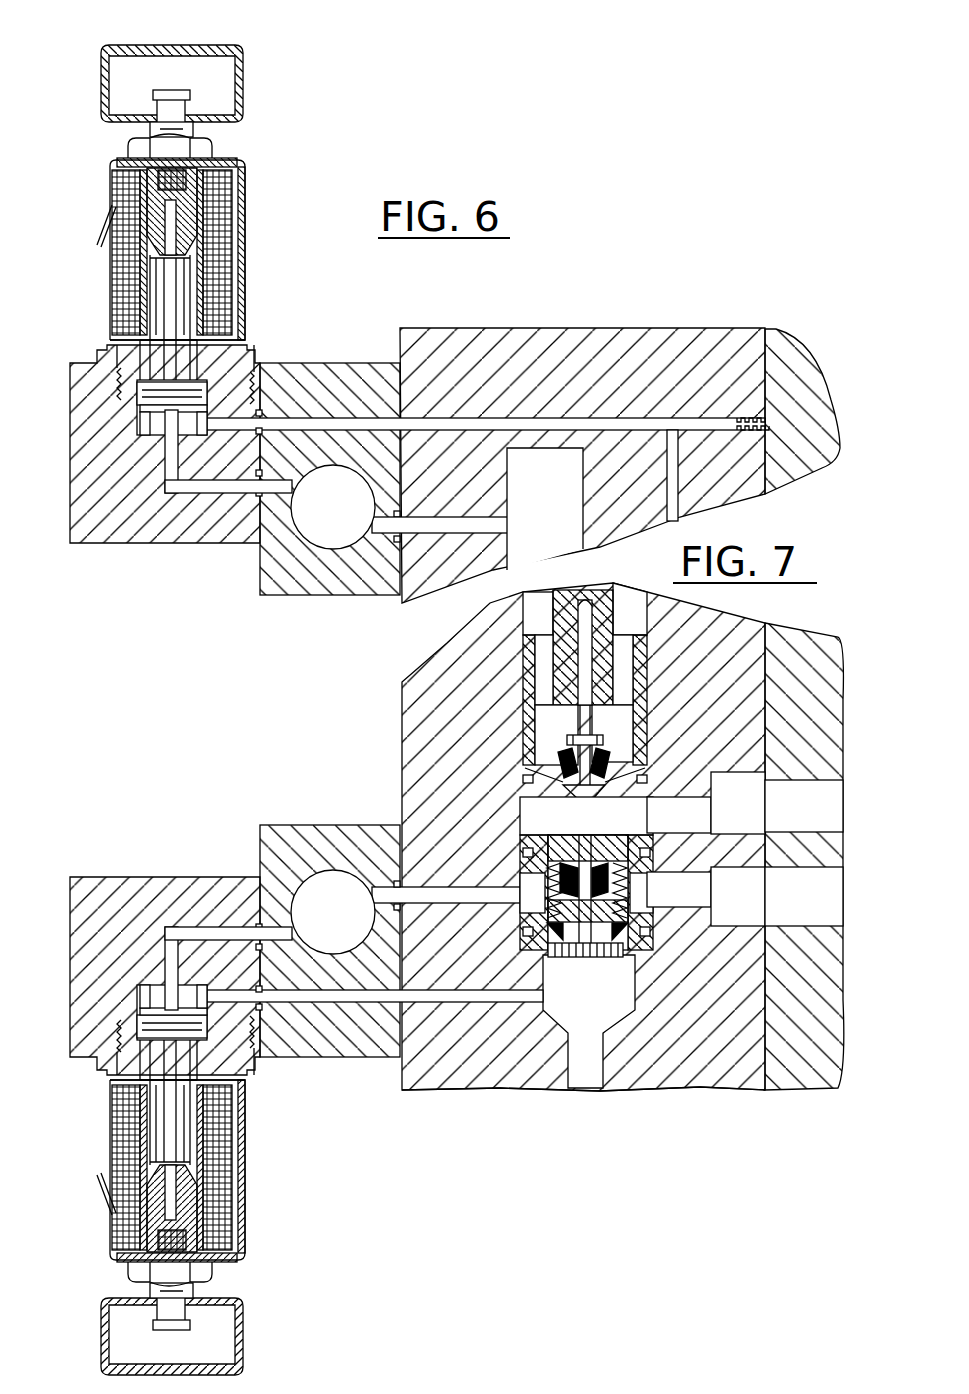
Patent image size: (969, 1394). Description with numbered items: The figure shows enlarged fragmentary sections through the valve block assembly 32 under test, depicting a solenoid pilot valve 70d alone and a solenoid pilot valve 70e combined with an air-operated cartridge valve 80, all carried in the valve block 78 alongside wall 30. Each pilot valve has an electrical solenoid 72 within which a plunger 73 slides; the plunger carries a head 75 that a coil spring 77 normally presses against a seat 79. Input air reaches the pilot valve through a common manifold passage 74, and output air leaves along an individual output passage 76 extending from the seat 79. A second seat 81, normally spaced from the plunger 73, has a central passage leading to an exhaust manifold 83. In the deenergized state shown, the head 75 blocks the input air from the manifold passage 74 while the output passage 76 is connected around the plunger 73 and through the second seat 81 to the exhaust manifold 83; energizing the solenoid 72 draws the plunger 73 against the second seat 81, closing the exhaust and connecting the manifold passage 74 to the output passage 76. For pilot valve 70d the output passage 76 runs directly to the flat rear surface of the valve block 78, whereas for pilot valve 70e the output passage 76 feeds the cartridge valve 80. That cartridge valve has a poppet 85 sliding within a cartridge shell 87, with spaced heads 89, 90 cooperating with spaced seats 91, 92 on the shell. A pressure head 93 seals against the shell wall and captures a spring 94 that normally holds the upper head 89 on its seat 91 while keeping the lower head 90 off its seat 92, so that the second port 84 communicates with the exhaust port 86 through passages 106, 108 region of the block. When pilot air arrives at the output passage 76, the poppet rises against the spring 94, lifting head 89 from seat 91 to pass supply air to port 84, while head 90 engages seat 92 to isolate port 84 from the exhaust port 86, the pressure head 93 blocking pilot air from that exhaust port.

In FIG. 6, the housing wall 30 is at (790, 352).
In FIG. 7, the housing wall 30 is at (803, 621).
In FIG. 6, the valve block assembly 32 is at (460, 319).
In FIG. 7, the valve block assembly 32 is at (392, 673).
In FIG. 6, the solenoid pilot valve 70d is at (262, 261).
In FIG. 7, the solenoid pilot valve 70e is at (262, 1175).
In FIG. 6, the electrical solenoid 72 is at (222, 222).
In FIG. 7, the electrical solenoid 72 is at (222, 1120).
In FIG. 6, the plunger 73 is at (177, 318).
In FIG. 7, the plunger 73 is at (160, 1115).
In FIG. 6, the common manifold passage 74 is at (566, 527).
In FIG. 6, the plunger head 75 is at (137, 404).
In FIG. 7, the plunger head 75 is at (140, 1018).
In FIG. 6, the output passage 76 is at (338, 420).
In FIG. 7, the output passage 76 is at (338, 1003).
In FIG. 6, the coil spring 77 is at (172, 388).
In FIG. 7, the coil spring 77 is at (175, 1030).
In FIG. 6, the valve block 78 is at (640, 336).
In FIG. 7, the valve block 78 is at (683, 1092).
In FIG. 6, the seat 79 is at (158, 434).
In FIG. 7, the seat 79 is at (148, 995).
In FIG. 7, the air-operated cartridge valve 80 is at (425, 777).
In FIG. 6, the second seat 81 is at (158, 213).
In FIG. 7, the second seat 81 is at (185, 1232).
In FIG. 6, the exhaust manifold 83 is at (238, 50).
In FIG. 7, the exhaust manifold 83 is at (240, 1328).
In FIG. 7, the second port 84 is at (700, 793).
In FIG. 7, the poppet 85 is at (575, 721).
In FIG. 7, the exhaust port 86 is at (700, 912).
In FIG. 7, the cartridge shell 87 is at (523, 697).
In FIG. 7, the upper head 89 is at (613, 773).
In FIG. 7, the lower head 90 is at (548, 888).
In FIG. 7, the seat 91 is at (540, 797).
In FIG. 7, the seat 92 is at (525, 850).
In FIG. 7, the pressure head 93 is at (550, 952).
In FIG. 7, the spring 94 is at (630, 895).
In FIG. 7, the passage 106 is at (822, 782).
In FIG. 7, the passage 108 is at (822, 922).